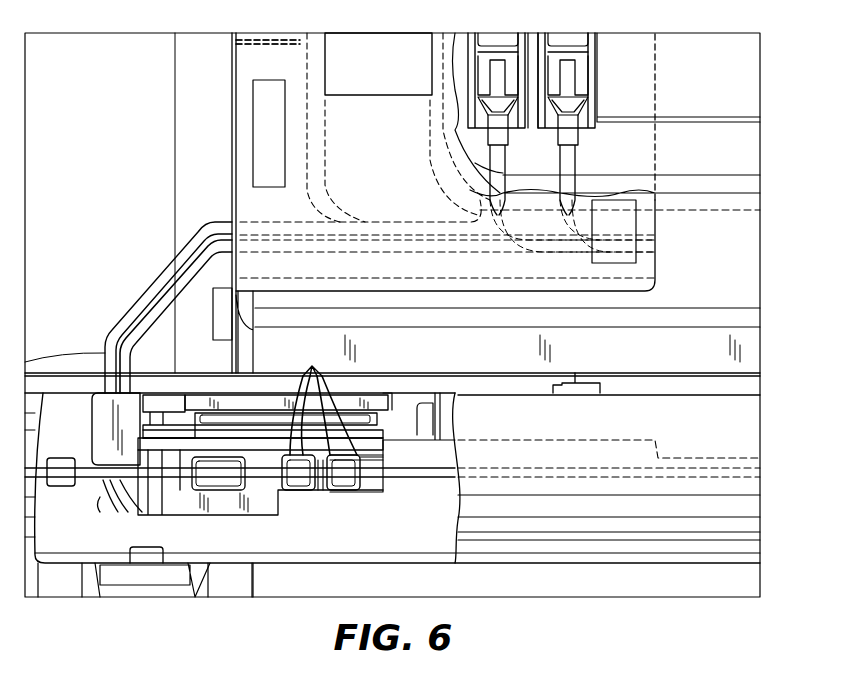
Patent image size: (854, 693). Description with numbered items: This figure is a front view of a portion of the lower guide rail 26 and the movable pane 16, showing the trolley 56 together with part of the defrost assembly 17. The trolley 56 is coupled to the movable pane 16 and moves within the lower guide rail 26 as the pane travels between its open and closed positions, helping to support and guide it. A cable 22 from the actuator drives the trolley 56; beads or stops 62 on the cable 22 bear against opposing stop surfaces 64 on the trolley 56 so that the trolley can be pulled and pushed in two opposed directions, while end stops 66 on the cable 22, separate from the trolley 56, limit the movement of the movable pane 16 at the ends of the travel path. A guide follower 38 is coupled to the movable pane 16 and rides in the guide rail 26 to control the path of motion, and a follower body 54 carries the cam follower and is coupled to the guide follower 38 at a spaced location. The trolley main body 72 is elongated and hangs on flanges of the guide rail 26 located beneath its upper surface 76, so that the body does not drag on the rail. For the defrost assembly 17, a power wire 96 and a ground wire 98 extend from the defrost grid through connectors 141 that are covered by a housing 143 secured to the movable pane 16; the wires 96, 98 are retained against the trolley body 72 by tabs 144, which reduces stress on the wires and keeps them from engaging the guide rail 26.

The movable pane 16 is at (717, 62).
The defrost assembly 17 is at (600, 30).
The cable 22 is at (438, 472).
The lower guide rail 26 is at (745, 510).
The guide follower 38 is at (585, 396).
The follower body 54 is at (477, 385).
The trolley 56 is at (385, 492).
The stops 62 is at (340, 478).
The stop surfaces 64 is at (320, 376).
The end stops 66 is at (62, 460).
The trolley main body 72 is at (200, 397).
The upper surface 76 is at (735, 395).
The power wire 96 is at (166, 308).
The ground wire 98 is at (170, 268).
The connectors 141 is at (552, 72).
The housing 143 is at (272, 58).
The tabs 144 is at (107, 410).